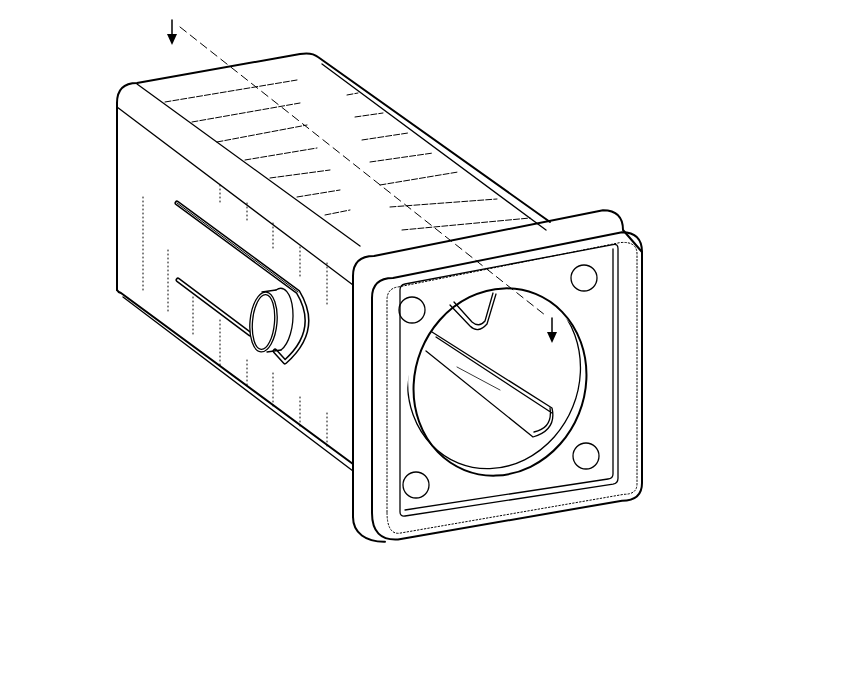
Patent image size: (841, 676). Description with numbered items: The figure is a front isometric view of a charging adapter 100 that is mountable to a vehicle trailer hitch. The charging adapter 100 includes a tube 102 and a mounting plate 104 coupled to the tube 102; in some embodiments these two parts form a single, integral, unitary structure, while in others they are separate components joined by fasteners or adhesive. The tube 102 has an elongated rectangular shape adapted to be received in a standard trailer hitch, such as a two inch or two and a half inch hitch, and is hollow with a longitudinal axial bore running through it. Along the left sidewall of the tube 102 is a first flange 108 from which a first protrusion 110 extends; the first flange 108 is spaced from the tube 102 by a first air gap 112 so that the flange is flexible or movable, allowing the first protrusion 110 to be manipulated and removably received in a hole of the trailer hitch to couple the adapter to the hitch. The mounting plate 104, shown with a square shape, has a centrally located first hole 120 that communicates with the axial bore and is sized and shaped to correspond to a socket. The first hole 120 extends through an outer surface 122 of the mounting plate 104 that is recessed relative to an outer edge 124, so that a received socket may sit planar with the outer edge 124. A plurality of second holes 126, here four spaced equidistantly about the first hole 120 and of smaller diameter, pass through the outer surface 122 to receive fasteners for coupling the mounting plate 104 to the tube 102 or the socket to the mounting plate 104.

The charging adapter 100 is at (121, 34).
The tube 102 is at (487, 199).
The mounting plate 104 is at (618, 320).
The first flange 108 is at (230, 278).
The first protrusion 110 is at (264, 330).
The first air gap 112 is at (160, 211).
The first hole 120 is at (554, 384).
The outer surface 122 is at (572, 479).
The outer edge 124 is at (528, 520).
The second holes 126 is at (586, 270).